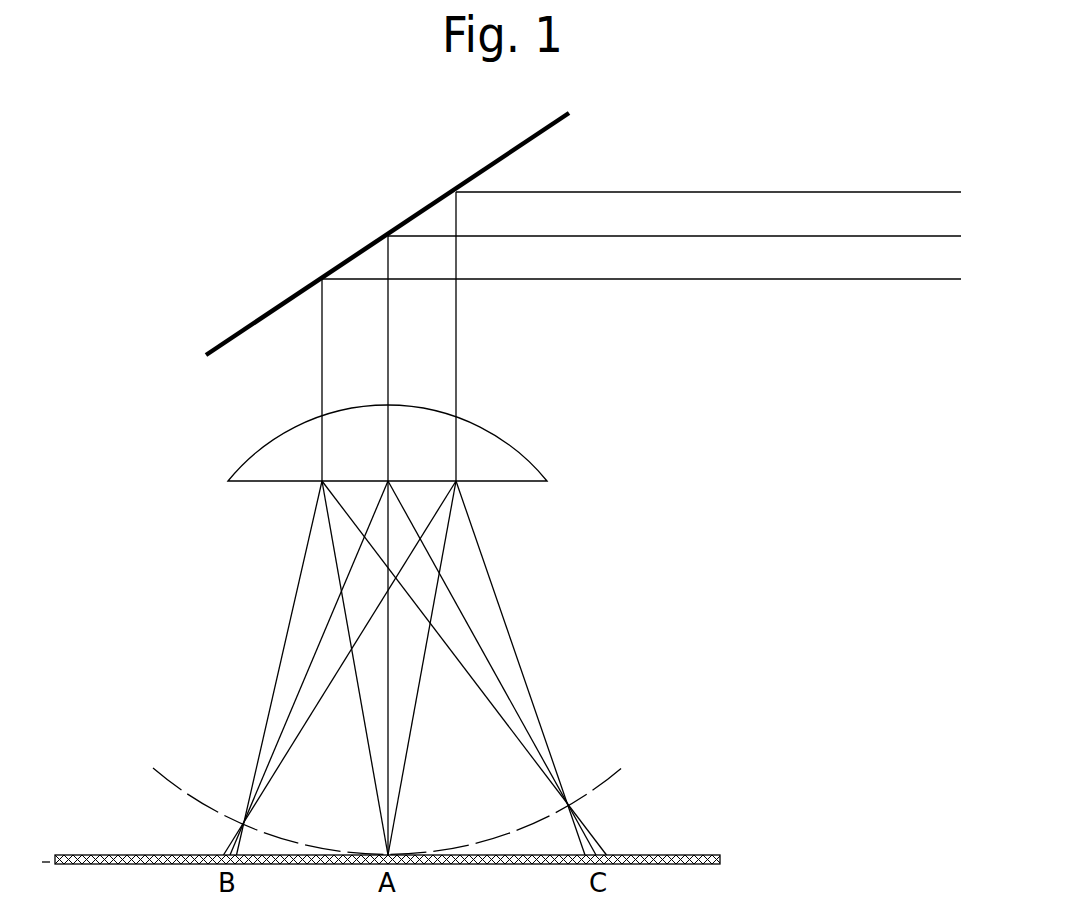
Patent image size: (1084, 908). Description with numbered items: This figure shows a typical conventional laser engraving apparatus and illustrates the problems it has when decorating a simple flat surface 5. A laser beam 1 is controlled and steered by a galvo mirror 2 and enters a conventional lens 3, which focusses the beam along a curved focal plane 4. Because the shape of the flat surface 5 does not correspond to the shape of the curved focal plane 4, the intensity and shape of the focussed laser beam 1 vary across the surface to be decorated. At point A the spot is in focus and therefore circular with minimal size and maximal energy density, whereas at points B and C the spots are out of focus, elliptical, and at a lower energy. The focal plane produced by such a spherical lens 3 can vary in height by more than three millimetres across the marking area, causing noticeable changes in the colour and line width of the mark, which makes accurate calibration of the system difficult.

The laser beam 1 is at (703, 192).
The galvo mirror 2 is at (346, 258).
The conventional lens 3 is at (535, 497).
The curved focal plane 4 is at (614, 774).
The flat surface 5 is at (698, 855).